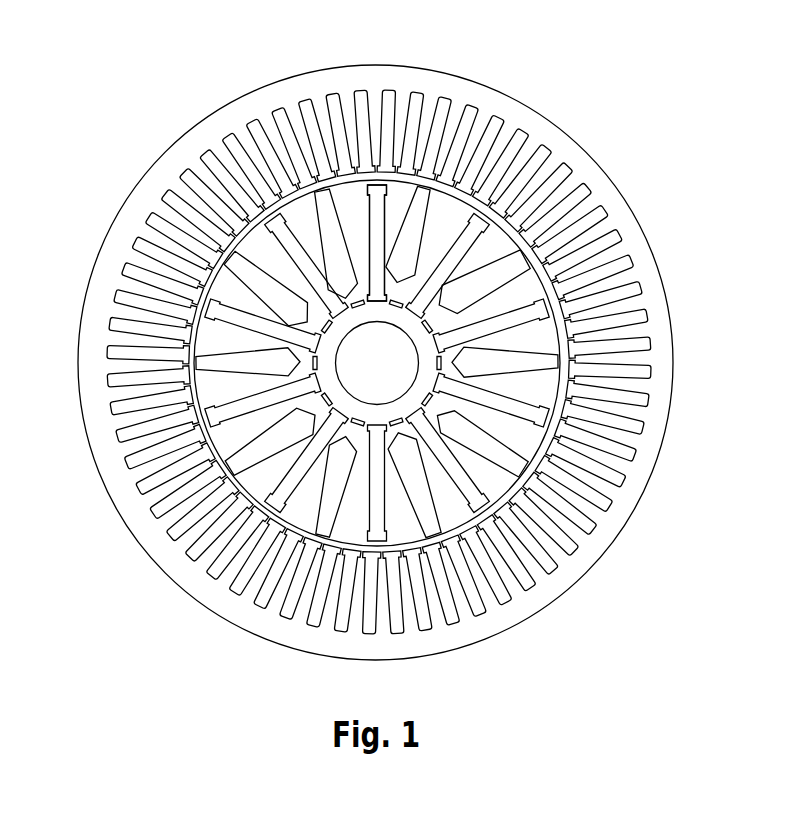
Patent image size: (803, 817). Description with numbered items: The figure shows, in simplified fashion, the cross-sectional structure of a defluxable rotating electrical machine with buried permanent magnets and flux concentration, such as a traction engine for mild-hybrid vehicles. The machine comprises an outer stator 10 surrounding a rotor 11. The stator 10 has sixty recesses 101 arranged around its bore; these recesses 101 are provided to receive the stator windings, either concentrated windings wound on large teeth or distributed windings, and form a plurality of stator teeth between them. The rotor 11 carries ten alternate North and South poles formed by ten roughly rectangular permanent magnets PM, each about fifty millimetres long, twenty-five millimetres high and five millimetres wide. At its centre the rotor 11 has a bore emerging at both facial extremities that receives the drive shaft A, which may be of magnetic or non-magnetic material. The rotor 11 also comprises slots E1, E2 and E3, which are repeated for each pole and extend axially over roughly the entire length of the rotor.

The stator 10 is at (541, 127).
The recesses 101 is at (470, 112).
The rotor 11 is at (212, 307).
The permanent magnets PM is at (366, 203).
The slot E1 is at (384, 206).
The slot E2 is at (320, 224).
The slot E3 is at (485, 283).
The drive shaft A is at (390, 374).